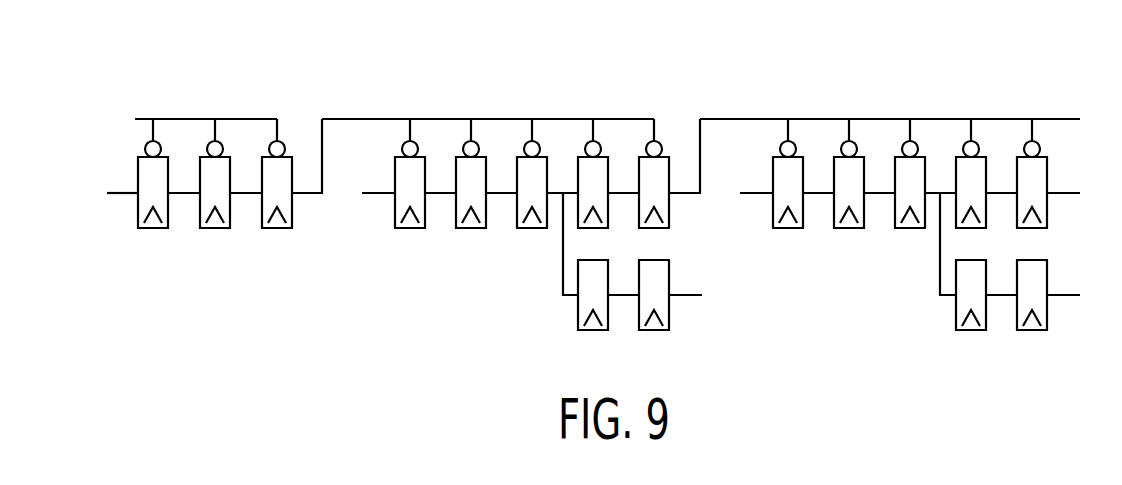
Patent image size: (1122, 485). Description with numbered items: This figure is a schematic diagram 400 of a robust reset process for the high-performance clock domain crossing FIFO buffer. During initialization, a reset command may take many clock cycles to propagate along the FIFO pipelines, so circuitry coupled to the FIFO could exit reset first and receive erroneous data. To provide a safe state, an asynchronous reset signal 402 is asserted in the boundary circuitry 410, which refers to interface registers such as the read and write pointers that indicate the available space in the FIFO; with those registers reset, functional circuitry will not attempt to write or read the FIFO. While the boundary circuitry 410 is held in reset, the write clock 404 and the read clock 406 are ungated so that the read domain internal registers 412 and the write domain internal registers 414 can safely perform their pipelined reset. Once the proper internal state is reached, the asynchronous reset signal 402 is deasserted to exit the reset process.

The diagram 400 is at (191, 58).
The asynchronous reset signal 402 is at (206, 119).
The write clock 404 is at (380, 119).
The read clock 406 is at (747, 119).
The boundary circuitry 410 is at (240, 232).
The read domain internal registers 412 is at (531, 295).
The write domain internal registers 414 is at (880, 286).